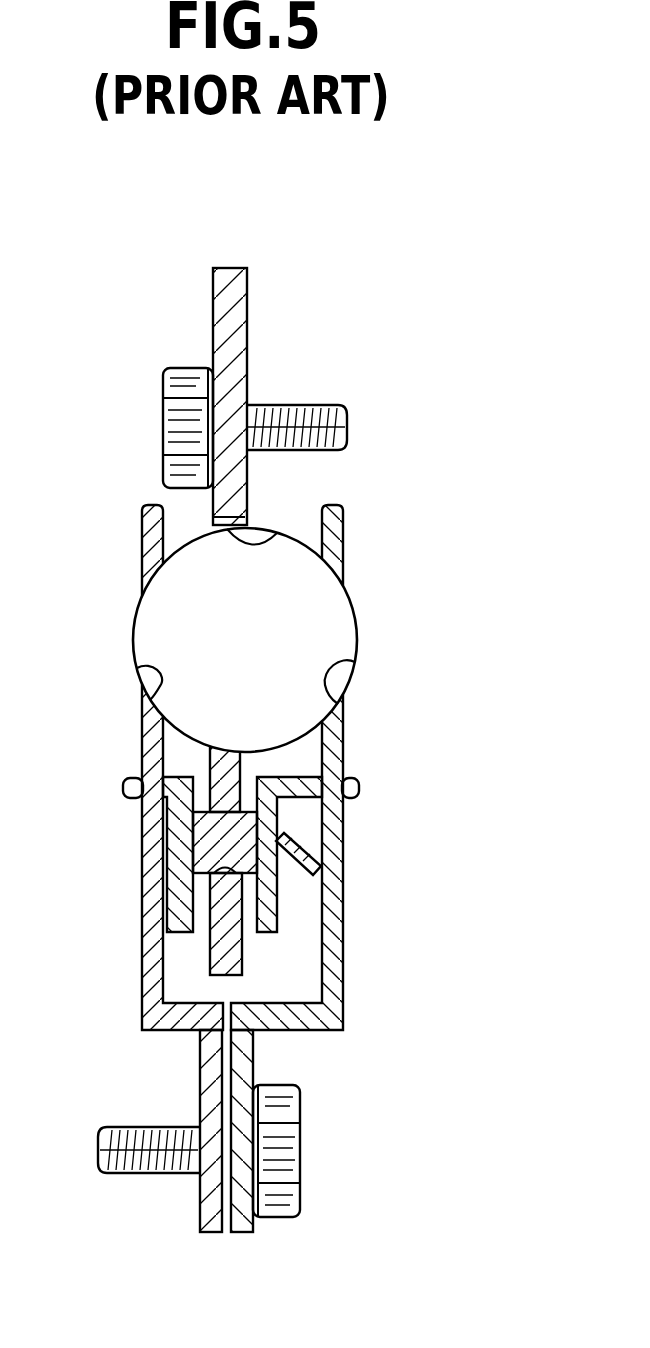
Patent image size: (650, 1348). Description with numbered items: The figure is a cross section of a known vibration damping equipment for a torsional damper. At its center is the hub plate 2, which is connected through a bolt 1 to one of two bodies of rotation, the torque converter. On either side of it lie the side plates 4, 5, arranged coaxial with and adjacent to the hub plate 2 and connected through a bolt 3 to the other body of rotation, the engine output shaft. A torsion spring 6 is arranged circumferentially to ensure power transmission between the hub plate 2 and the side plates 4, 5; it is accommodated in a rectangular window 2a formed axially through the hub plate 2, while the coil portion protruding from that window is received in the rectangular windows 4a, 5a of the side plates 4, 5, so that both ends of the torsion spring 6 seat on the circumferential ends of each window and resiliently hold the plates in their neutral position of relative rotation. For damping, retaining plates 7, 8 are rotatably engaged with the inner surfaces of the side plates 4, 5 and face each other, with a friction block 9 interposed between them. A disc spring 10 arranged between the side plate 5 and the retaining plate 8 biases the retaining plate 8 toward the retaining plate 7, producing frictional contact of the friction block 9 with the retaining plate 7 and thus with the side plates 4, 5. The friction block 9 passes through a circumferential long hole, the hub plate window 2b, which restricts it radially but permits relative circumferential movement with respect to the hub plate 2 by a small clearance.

The bolt 1 is at (297, 405).
The hub plate 2 is at (225, 290).
The rectangular window 2a is at (277, 527).
The hub plate window 2b is at (205, 900).
The bolt 3 is at (147, 1175).
The side plate 4 is at (150, 993).
The rectangular window 4a is at (137, 668).
The side plate 5 is at (340, 1013).
The rectangular window 5a is at (355, 662).
The torsion spring 6 is at (360, 613).
The retaining plate 7 is at (183, 847).
The retaining plate 8 is at (278, 910).
The friction block 9 is at (205, 861).
The disc spring 10 is at (318, 845).